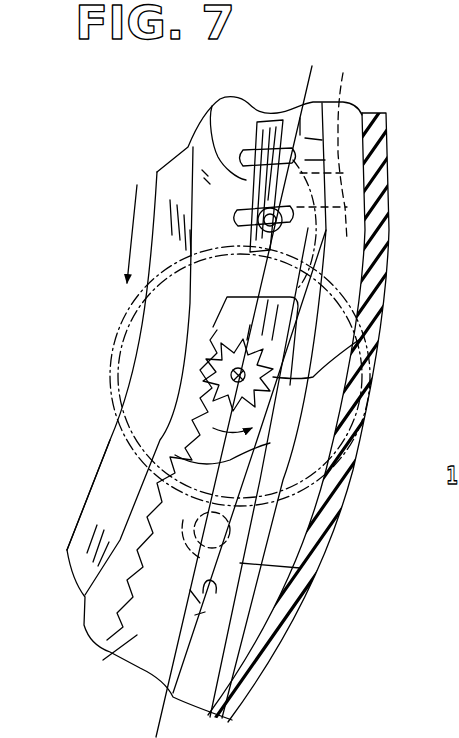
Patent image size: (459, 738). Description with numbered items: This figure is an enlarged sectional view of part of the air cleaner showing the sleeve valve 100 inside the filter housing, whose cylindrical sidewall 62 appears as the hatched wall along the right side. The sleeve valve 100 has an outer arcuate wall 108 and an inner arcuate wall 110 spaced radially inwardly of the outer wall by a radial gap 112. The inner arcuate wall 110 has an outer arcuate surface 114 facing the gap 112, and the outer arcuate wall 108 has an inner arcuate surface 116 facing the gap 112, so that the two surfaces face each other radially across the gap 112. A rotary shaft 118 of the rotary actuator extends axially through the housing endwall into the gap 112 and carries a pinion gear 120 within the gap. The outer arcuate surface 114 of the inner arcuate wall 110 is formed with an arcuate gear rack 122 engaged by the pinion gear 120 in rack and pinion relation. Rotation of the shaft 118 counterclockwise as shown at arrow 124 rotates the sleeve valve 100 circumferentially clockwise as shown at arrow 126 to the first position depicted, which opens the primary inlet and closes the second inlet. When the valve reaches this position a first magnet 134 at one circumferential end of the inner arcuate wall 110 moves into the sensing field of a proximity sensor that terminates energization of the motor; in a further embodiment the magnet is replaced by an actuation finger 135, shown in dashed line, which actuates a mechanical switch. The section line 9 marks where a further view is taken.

The section line 9- 9 is at (309, 77).
The housing rim 62 is at (389, 180).
The locking mechanism 100 is at (345, 737).
The cam member 108 is at (240, 563).
The lever arm 110 is at (137, 523).
The pawl end 112 is at (103, 660).
The rack teeth 114 is at (97, 583).
The pivot pin 116 is at (200, 588).
The ratchet gear 118 is at (232, 378).
The gear shaft 120 is at (363, 337).
The spring 122 is at (230, 460).
The rotation path 124 is at (175, 455).
The direction of movement 126 is at (132, 237).
The latch housing 134 is at (212, 106).
The latch member 135 is at (345, 74).